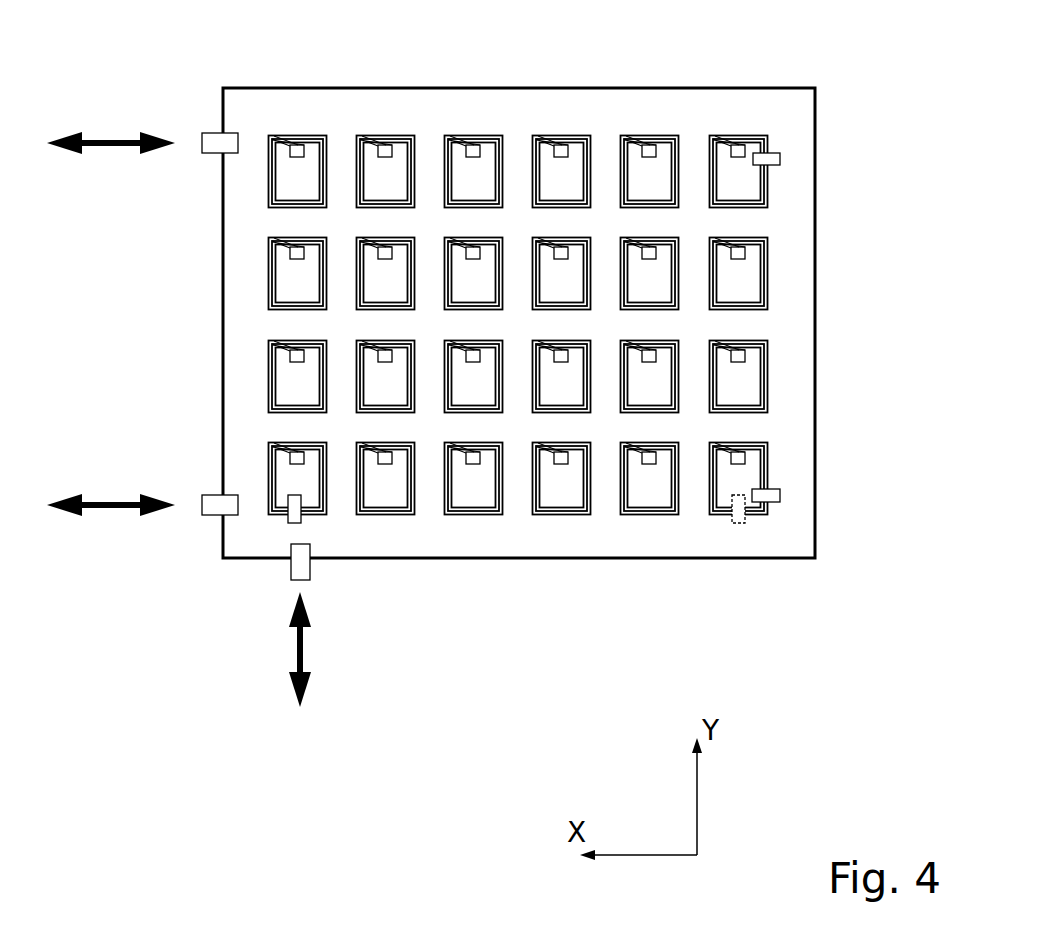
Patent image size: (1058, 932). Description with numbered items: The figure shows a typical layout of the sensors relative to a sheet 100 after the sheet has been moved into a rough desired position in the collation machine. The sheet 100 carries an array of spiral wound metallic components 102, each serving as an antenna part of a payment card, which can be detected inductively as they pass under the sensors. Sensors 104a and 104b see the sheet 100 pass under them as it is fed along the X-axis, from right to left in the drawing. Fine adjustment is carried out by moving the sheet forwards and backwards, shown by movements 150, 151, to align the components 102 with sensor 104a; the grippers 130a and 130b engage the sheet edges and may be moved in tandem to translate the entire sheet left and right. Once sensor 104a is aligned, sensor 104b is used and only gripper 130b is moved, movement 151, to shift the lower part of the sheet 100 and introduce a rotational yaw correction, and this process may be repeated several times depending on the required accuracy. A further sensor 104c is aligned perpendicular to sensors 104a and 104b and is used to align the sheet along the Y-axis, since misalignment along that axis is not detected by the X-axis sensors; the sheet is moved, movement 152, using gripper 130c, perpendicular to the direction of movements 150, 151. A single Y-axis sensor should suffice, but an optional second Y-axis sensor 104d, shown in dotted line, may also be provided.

The sheet 100 is at (400, 88).
The spiral wound metallic component 102 is at (768, 258).
The sensor 104a is at (780, 159).
The second sensor 104b is at (780, 496).
The further sensor 104c is at (302, 520).
The sensor 104d is at (740, 523).
The gripper 130a is at (208, 133).
The gripper 130b is at (208, 495).
The gripper 130c is at (290, 565).
The movement 150 is at (117, 138).
The movement 151 is at (115, 500).
The movement 152 is at (293, 640).